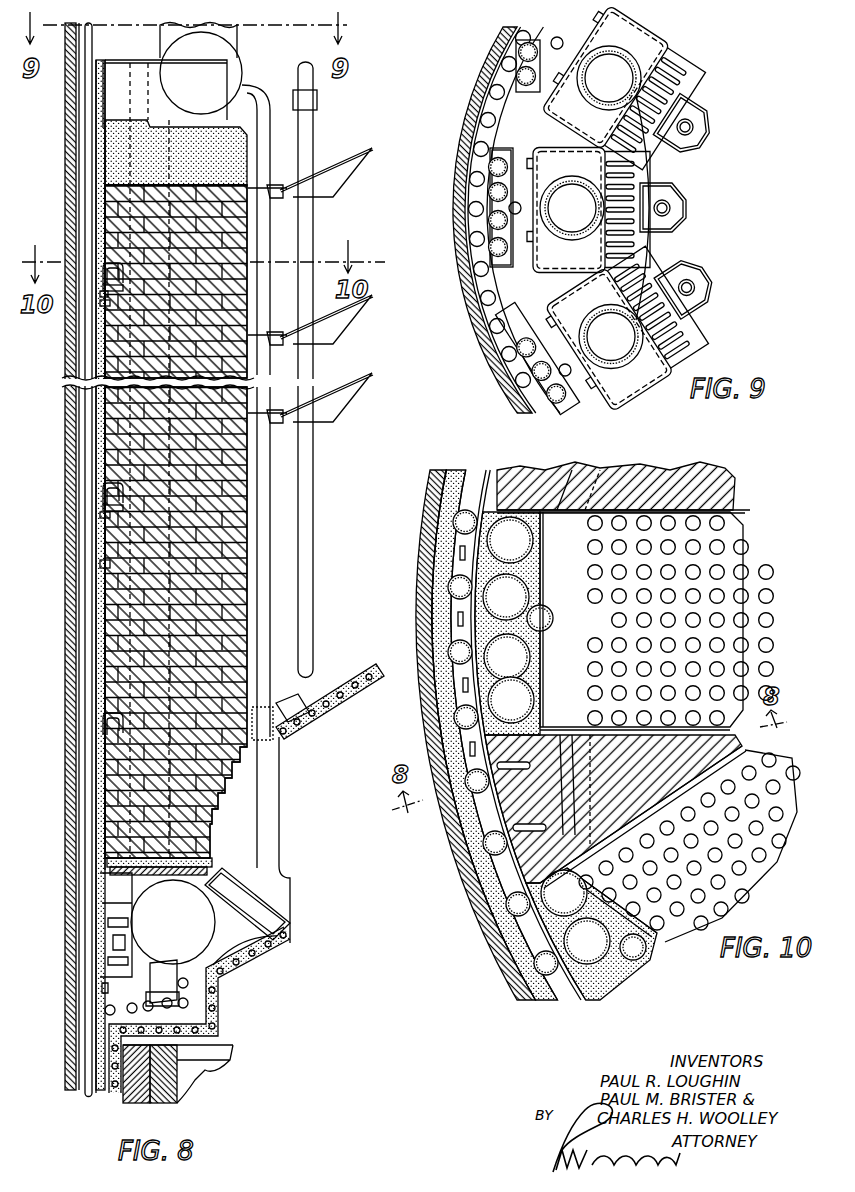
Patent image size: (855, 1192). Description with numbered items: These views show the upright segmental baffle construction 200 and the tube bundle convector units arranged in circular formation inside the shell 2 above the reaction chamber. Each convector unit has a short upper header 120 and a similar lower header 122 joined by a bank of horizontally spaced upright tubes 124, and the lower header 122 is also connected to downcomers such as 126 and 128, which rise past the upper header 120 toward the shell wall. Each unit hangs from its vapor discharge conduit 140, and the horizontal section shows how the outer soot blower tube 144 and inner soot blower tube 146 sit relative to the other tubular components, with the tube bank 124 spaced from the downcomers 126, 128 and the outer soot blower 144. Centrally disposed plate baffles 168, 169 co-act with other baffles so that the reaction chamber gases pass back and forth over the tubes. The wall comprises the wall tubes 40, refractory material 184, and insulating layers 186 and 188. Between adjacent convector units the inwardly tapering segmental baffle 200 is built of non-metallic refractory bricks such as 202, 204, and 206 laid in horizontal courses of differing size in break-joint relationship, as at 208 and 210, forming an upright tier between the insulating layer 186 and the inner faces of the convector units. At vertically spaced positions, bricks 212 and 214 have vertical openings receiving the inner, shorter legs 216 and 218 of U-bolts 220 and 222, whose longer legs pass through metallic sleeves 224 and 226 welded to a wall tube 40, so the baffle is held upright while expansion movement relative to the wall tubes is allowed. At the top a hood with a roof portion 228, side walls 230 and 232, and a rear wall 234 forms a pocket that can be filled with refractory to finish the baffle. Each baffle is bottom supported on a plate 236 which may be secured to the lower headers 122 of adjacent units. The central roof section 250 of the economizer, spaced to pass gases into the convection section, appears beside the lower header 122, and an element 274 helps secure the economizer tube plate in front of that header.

In FIG. 8, the shell 2 is at (70, 790).
In FIG. 9, the shell 2 is at (458, 263).
In FIG. 10, the shell 2 is at (430, 477).
In FIG. 8, the wall tubes 40 is at (82, 425).
In FIG. 9, the wall tubes 40 is at (480, 100).
In FIG. 8, the upper header 120 is at (242, 60).
In FIG. 9, the upper header 120 is at (647, 68).
In FIG. 8, the lower header 122 is at (213, 905).
In FIG. 8, the bank of tubes 124 is at (270, 550).
In FIG. 9, the bank of tubes 124 is at (653, 187).
In FIG. 10, the bank of tubes 124 is at (713, 517).
In FIG. 9, the downcomer 126 is at (490, 160).
In FIG. 10, the downcomer 126 is at (497, 543).
In FIG. 9, the downcomer 128 is at (490, 190).
In FIG. 10, the downcomer 128 is at (493, 597).
In FIG. 9, the vapor discharge conduit 140 is at (591, 207).
In FIG. 9, the outer soot blower tube 144 is at (509, 208).
In FIG. 10, the outer soot blower tube 144 is at (563, 605).
In FIG. 8, the inner soot blower tube 146 is at (314, 125).
In FIG. 9, the inner soot blower tube 146 is at (671, 208).
In FIG. 8, the centrally disposed plate baffle 168 is at (367, 150).
In FIG. 8, the centrally disposed plate baffle 169 is at (377, 362).
In FIG. 10, the refractory material 184 is at (457, 677).
In FIG. 8, the insulating layer 186 is at (100, 680).
In FIG. 10, the insulating layer 186 is at (490, 483).
In FIG. 10, the insulating layer 188 is at (457, 533).
In FIG. 8, the segmental baffle construction 200 is at (228, 498).
In FIG. 10, the segmental baffle construction 200 is at (740, 737).
In FIG. 10, the brick 202 is at (495, 880).
In FIG. 10, the brick 204 is at (627, 797).
In FIG. 10, the brick 206 is at (553, 735).
In FIG. 10, the break-joint 208 is at (497, 772).
In FIG. 10, the break-joint 210 is at (483, 917).
In FIG. 8, the brick with opening 212 is at (100, 572).
In FIG. 8, the brick with opening 214 is at (103, 306).
In FIG. 8, the inner leg of U-bolt 216 is at (133, 247).
In FIG. 8, the inner leg of U-bolt 218 is at (127, 485).
In FIG. 8, the U-bolt 220 is at (110, 268).
In FIG. 8, the U-bolt 222 is at (101, 493).
In FIG. 8, the metallic sleeve 224 is at (103, 513).
In FIG. 8, the metallic sleeve 226 is at (97, 298).
In FIG. 8, the roof portion 228 is at (128, 62).
In FIG. 10, the side wall of hood 230 is at (697, 723).
In FIG. 10, the side wall of hood 232 is at (750, 860).
In FIG. 8, the rear wall 234 is at (103, 90).
In FIG. 8, the plate 236 is at (112, 875).
In FIG. 8, the central roof section 250 is at (354, 741).
In FIG. 8, the securing element 274 is at (218, 972).